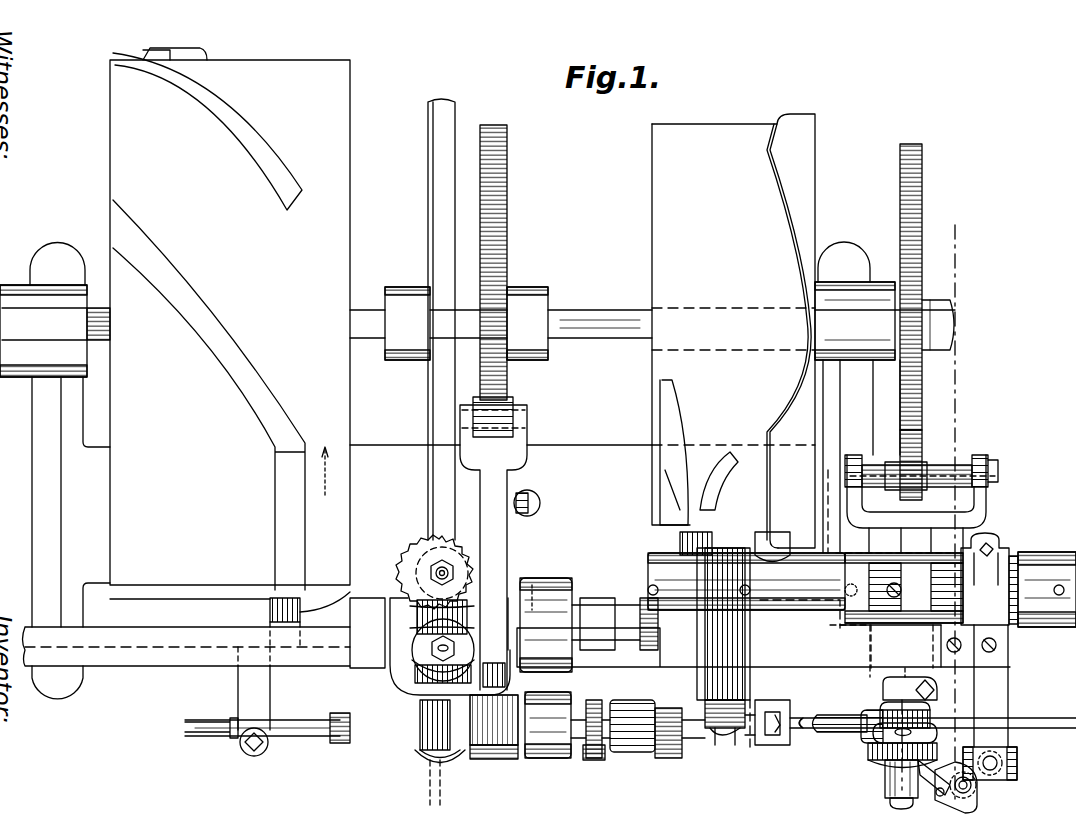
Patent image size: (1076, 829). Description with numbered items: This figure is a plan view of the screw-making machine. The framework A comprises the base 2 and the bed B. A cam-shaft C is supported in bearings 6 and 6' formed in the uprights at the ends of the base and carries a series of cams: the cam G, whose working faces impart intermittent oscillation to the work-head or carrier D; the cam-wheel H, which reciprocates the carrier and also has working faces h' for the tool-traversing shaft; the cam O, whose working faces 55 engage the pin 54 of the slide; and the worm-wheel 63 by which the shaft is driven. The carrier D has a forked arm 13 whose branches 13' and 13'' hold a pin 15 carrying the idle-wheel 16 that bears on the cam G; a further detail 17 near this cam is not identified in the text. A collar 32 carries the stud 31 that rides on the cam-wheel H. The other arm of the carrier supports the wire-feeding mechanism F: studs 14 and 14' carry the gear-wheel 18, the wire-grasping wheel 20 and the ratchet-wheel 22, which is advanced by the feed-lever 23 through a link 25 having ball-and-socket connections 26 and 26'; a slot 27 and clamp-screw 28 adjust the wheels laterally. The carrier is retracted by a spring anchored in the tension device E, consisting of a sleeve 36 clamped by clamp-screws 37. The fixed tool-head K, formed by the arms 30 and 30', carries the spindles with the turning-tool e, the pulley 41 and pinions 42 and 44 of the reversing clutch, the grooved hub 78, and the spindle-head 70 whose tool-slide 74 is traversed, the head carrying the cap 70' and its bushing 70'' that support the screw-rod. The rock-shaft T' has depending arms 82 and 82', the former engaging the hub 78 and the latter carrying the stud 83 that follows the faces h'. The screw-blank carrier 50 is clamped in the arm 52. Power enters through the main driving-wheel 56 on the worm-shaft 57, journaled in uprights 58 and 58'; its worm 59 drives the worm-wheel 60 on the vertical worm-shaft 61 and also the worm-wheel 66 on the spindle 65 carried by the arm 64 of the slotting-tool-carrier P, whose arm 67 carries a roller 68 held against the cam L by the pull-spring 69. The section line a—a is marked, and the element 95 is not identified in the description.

The framework A is at (176, 538).
The bearing 6 is at (43, 310).
The bearing 6' is at (884, 301).
The cam-shaft C is at (592, 316).
The cam O is at (230, 323).
The worm-wheel 63 is at (428, 395).
The cam L is at (500, 250).
The roller 68 is at (508, 400).
The laterally projecting arm 67 is at (497, 492).
The pull-spring 69 is at (533, 505).
The base 2 is at (572, 448).
The worm-wheel 60 is at (425, 552).
The worm-shaft 61 is at (430, 571).
The worm 59 is at (465, 622).
The worm-wheel 66 is at (430, 670).
The spindle 65 is at (432, 648).
The outwardly-extending arm 64 is at (454, 671).
The arm of tool-head 30' is at (494, 763).
The oscillating slotting-tool-carrier P is at (435, 730).
The upright 58 is at (367, 633).
The lug or pin 54 is at (283, 610).
The working-face 55 is at (330, 600).
The main driving-wheel 56 is at (546, 625).
The upright 58' is at (606, 624).
The horizontal worm-shaft 57 is at (615, 600).
The bed B is at (763, 634).
The screw-blank carrier 50 is at (298, 724).
The rod 95 is at (188, 728).
The laterally projecting arm 52 is at (240, 684).
The driving pulley 41 is at (548, 725).
The pinion 44 is at (594, 700).
The pinion 42 is at (590, 763).
The tool-head K is at (667, 745).
The arm of tool-head 30 is at (693, 753).
The depending arm 82 is at (725, 736).
The grooved hub or collar 78 is at (738, 748).
The section line a— a is at (792, 573).
The spindle-head 70 is at (767, 711).
The tool-slide 74 is at (780, 712).
The bushing 70'' is at (811, 712).
The cap 70' is at (832, 735).
The cam-wheel H is at (733, 331).
The working faces h' is at (699, 452).
The stud 83 is at (680, 540).
The rock-shaft T' is at (741, 593).
The depending arm 82' is at (732, 528).
The stud or projection 31 is at (775, 540).
The collar 32 is at (746, 581).
The arm of carrier 13 is at (911, 491).
The fork arm 13' is at (851, 458).
The fork arm 13'' is at (987, 458).
The pin or shaft 15 is at (958, 465).
The idle-wheel 16 is at (918, 468).
The gear teeth 17 is at (925, 400).
The cam G is at (900, 214).
The turning-tool e is at (926, 516).
The clamp-screws 37 is at (990, 543).
The tension device E is at (1042, 589).
The sleeve 36 is at (1040, 562).
The slot 27 is at (974, 686).
The ball-and-socket connection 26' is at (990, 754).
The work-head or carrier D is at (938, 705).
The clamp-screw 28 is at (921, 678).
The wire-grasping wheel 20 is at (935, 700).
The gear-wheel 18 is at (930, 718).
The stud 14 is at (918, 734).
The ratchet-wheel 22 is at (868, 760).
The wire-supporting and feeding mechanism F is at (887, 781).
The stud 14' is at (884, 812).
The feed-lever 23 is at (926, 790).
The link 25 is at (971, 790).
The ball-and-socket connection 26 is at (956, 795).